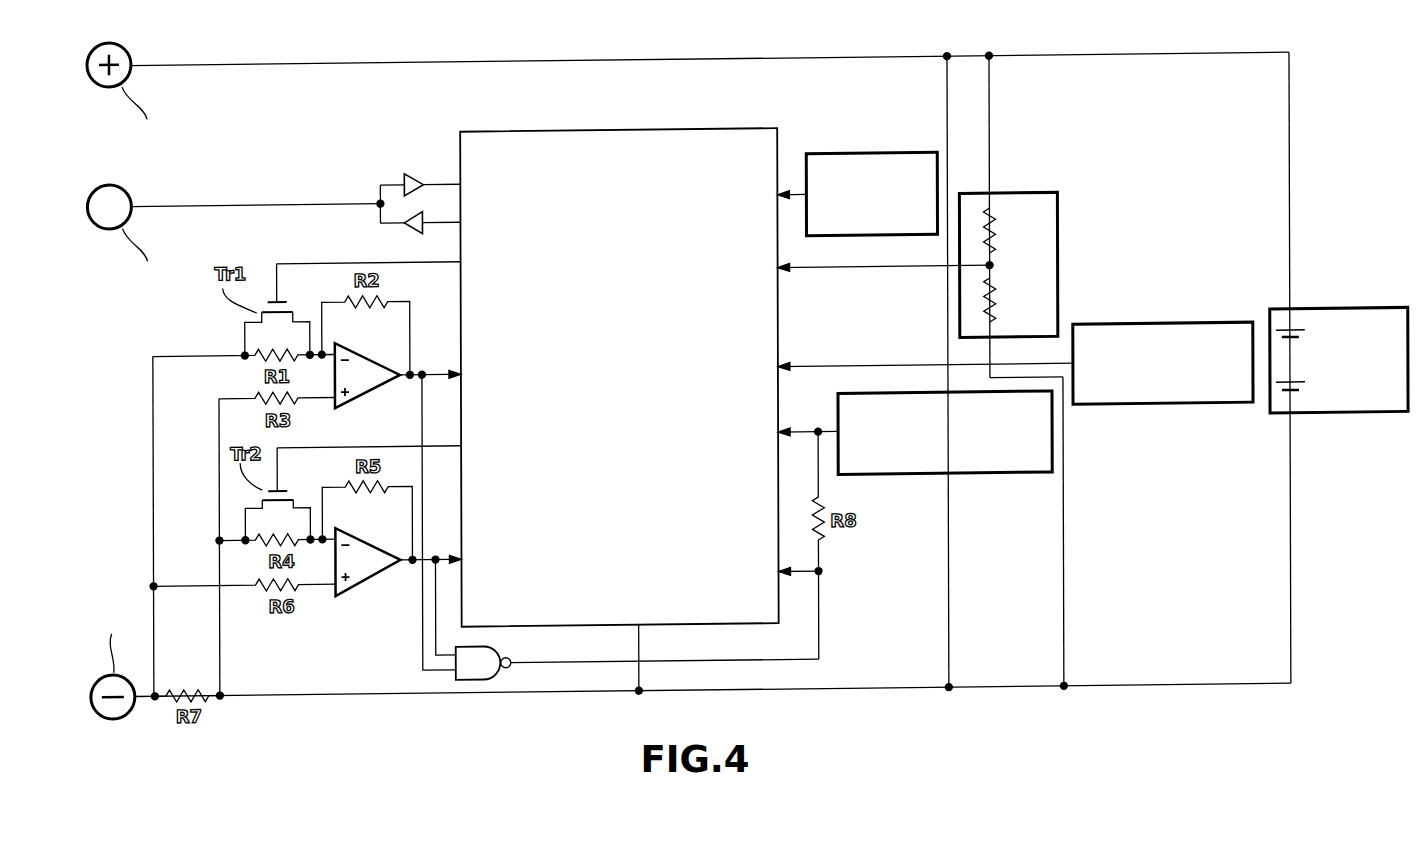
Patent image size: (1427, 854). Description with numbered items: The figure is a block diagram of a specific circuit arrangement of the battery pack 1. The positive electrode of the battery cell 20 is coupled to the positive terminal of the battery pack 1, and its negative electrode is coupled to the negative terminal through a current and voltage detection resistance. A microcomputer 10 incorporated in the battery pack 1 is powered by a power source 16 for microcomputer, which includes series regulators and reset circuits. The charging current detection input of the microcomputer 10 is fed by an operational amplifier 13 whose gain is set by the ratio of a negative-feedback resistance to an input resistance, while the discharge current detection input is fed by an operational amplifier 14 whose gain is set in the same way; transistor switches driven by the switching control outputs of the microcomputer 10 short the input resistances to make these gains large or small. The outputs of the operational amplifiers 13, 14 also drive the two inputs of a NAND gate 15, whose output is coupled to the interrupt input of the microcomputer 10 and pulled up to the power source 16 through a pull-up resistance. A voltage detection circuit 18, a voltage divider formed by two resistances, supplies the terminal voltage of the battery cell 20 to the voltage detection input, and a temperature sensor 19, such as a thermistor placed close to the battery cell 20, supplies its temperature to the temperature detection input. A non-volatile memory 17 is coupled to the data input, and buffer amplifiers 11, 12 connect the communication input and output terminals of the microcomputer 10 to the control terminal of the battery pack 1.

The battery pack 1 is at (288, 142).
The microcomputer 10 is at (605, 129).
The buffer amplifier 11 is at (408, 169).
The buffer amplifier 12 is at (405, 230).
The operational amplifier 13 is at (380, 389).
The operational amplifier 14 is at (372, 576).
The NAND gate 15 is at (497, 643).
The power source for microcomputer 16 is at (1022, 479).
The non-volatile memory 17 is at (858, 155).
The voltage detection circuit 18 is at (1058, 224).
The temperature sensor 19 is at (1173, 328).
The battery cell 20 is at (1358, 316).